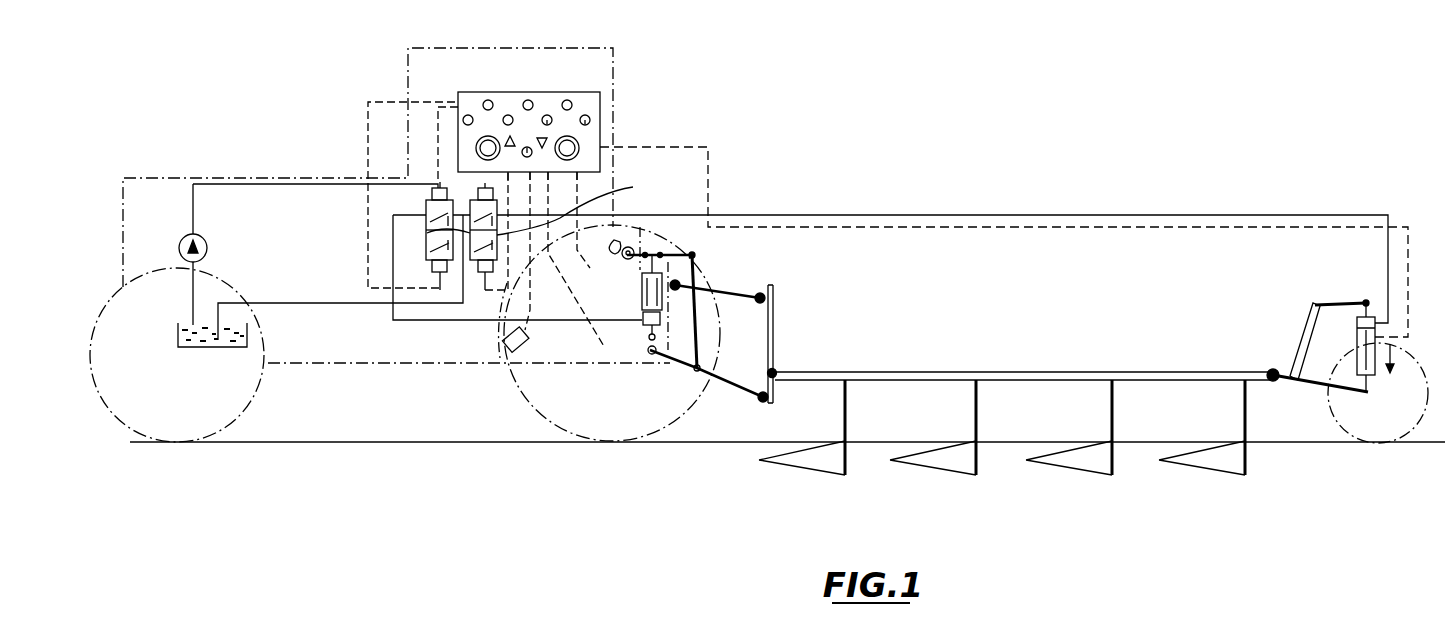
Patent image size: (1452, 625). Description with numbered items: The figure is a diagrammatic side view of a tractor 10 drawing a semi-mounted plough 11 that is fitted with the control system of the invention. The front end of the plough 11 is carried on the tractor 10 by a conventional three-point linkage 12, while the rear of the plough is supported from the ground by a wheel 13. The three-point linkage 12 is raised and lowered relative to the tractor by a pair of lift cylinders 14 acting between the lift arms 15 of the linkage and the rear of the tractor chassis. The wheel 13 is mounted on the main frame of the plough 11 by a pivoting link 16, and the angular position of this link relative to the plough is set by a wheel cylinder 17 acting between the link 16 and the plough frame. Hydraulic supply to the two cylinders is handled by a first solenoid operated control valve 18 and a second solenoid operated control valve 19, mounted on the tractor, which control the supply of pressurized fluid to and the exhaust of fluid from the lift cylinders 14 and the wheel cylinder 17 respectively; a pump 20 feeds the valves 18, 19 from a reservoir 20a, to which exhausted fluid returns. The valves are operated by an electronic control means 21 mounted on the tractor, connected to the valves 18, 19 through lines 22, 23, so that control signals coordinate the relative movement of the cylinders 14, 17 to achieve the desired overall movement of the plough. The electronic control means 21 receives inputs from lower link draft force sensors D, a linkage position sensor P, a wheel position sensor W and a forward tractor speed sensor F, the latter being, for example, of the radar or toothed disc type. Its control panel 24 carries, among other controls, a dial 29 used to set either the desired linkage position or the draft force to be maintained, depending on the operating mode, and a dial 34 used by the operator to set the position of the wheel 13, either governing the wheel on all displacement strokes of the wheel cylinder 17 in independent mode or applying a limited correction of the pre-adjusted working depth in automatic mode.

The tractor 10 is at (163, 198).
The semi-mounted plough 11 is at (1023, 380).
The 3-point linkage 12 is at (737, 390).
The wheel 13 is at (1410, 383).
The lift cylinders 14 is at (640, 293).
The lift arms 15 is at (668, 253).
The pivoting link 16 is at (1307, 387).
The wheel cylinder 17 is at (1388, 337).
The first solenoid operated control valve 18 is at (427, 233).
The second solenoid operated control valve 19 is at (582, 264).
The pump 20 is at (200, 236).
The reservoir 20a is at (250, 325).
The electronic control means 21 is at (577, 92).
The line 22 is at (417, 127).
The line 23 is at (485, 183).
The control panel 24 is at (480, 92).
The dial 29 is at (476, 150).
The dial 34 is at (580, 146).
The linkage position sensor P is at (588, 263).
The forward tractor speed sensor F is at (523, 348).
The lower link draft force sensors D is at (642, 349).
The wheel position sensor W is at (1392, 347).